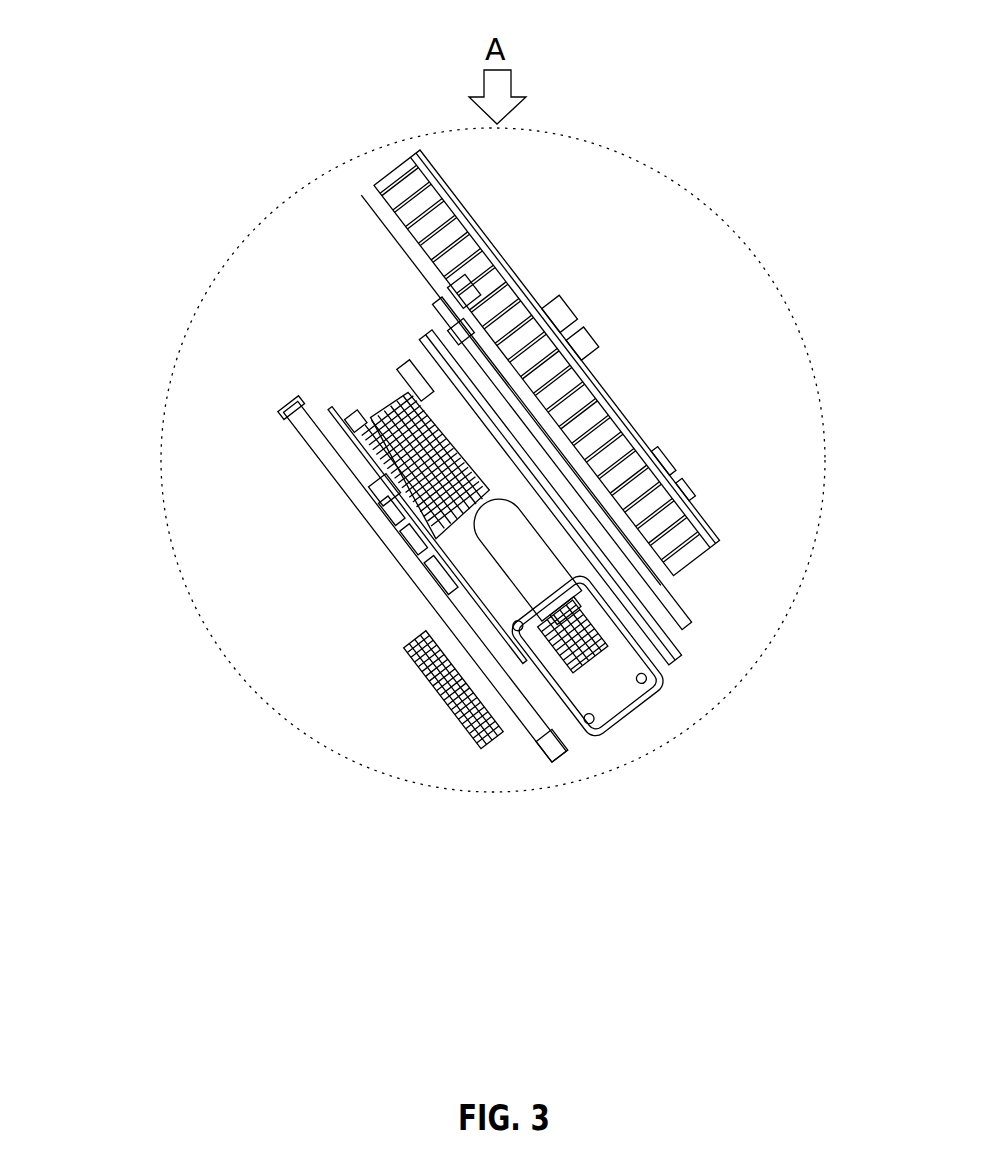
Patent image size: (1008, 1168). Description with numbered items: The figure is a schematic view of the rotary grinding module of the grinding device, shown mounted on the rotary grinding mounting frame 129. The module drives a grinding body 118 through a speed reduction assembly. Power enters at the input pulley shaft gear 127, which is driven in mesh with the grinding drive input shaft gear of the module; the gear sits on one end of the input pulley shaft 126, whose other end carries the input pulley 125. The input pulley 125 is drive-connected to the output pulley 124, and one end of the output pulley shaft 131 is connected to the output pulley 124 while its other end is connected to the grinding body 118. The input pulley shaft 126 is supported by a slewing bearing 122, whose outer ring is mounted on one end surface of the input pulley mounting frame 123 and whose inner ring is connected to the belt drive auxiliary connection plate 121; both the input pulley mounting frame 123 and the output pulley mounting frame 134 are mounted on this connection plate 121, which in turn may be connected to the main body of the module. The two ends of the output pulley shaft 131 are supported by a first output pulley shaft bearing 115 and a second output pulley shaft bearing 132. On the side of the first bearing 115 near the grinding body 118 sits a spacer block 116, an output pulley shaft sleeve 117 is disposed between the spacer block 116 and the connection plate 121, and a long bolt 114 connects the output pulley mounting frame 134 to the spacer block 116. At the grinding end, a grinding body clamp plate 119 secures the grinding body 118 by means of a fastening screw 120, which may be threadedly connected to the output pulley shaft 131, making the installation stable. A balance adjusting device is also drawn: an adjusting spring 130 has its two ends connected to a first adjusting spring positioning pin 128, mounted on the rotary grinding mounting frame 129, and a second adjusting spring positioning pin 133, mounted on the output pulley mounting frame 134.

The long bolt 114 is at (380, 420).
The first output pulley shaft bearing 115 is at (410, 390).
The spacer block 116 is at (400, 368).
The output pulley shaft sleeve 117 is at (462, 360).
The grinding body 118 is at (530, 340).
The grinding body clamp plate 119 is at (568, 312).
The fastening screw 120 is at (591, 335).
The belt drive auxiliary connection plate 121 is at (663, 462).
The slewing bearing 122 is at (687, 487).
The input pulley mounting frame 123 is at (562, 543).
The output pulley 124 is at (575, 563).
The input pulley 125 is at (592, 640).
The input pulley shaft 126 is at (560, 713).
The input pulley shaft gear 127 is at (443, 693).
The first adjusting spring positioning pin 128 is at (440, 575).
The rotary grinding mounting frame 129 is at (425, 565).
The adjusting spring 130 is at (420, 514).
The output pulley shaft 131 is at (405, 495).
The second output pulley shaft bearing 132 is at (390, 478).
The second adjusting spring positioning pin 133 is at (283, 405).
The output pulley mounting frame 134 is at (410, 392).